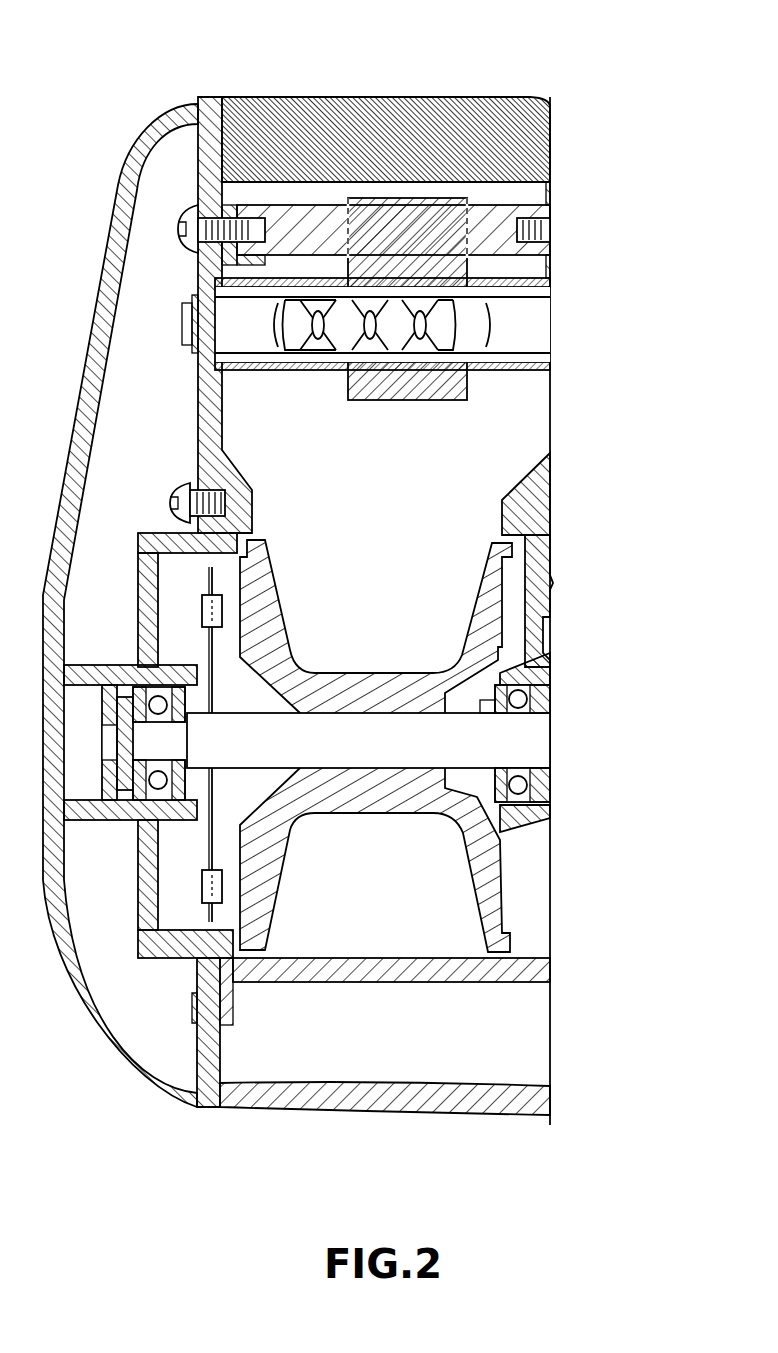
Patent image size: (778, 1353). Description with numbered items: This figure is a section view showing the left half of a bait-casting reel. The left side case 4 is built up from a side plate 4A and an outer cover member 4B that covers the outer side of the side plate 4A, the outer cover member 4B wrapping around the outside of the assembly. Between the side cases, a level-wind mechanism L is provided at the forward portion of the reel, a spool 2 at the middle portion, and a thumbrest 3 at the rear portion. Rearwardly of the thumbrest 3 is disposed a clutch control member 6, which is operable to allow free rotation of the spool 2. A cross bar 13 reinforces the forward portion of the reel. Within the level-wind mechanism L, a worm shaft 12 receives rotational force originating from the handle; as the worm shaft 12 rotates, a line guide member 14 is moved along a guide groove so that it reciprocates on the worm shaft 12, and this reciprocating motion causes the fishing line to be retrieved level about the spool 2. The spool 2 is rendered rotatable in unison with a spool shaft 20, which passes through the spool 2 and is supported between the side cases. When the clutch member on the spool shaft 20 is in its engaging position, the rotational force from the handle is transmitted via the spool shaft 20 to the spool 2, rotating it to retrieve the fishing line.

The spool 2 is at (372, 813).
The thumbrest 3 is at (422, 958).
The side case 4 is at (147, 553).
The side plate 4A is at (221, 573).
The outer cover member 4B is at (150, 135).
The clutch control member 6 is at (418, 1115).
The worm shaft 12 is at (258, 345).
The cross bar 13 is at (332, 212).
The line guide member 14 is at (353, 403).
The spool shaft 20 is at (362, 700).
The level-wind mechanism L is at (403, 413).